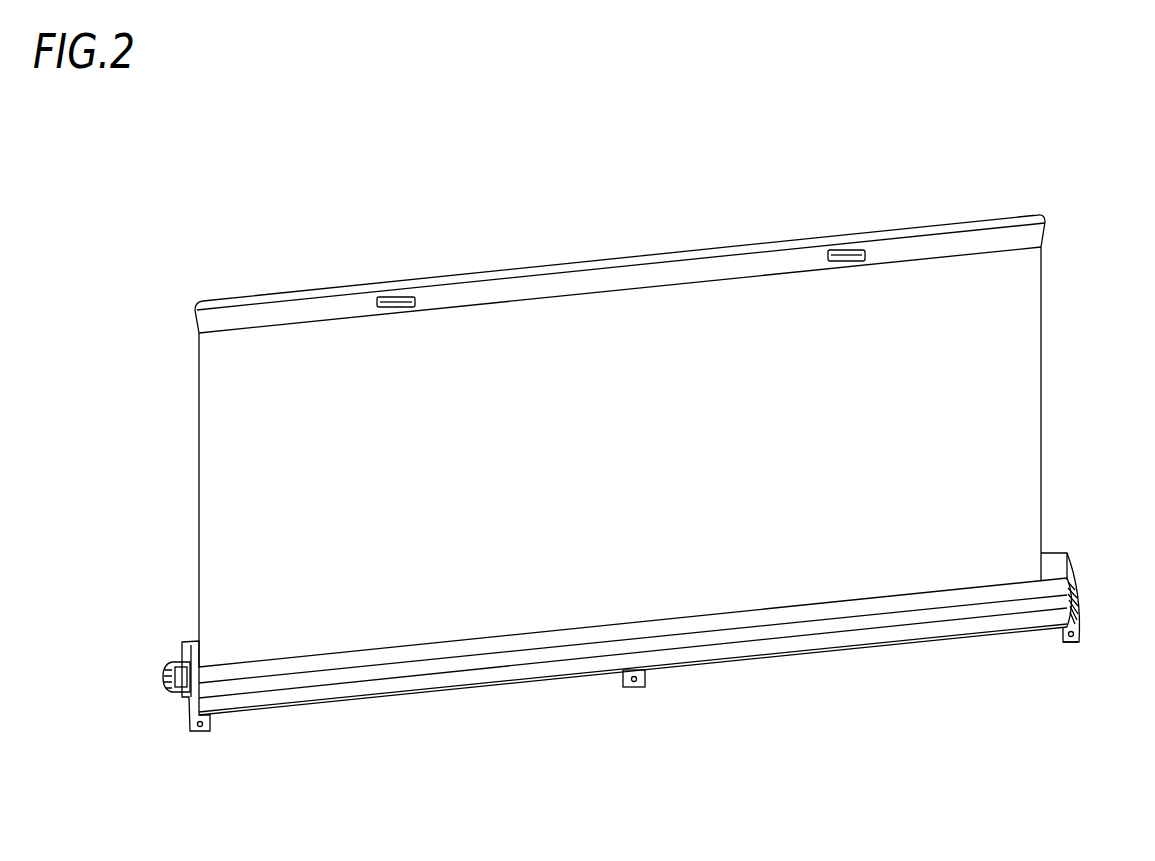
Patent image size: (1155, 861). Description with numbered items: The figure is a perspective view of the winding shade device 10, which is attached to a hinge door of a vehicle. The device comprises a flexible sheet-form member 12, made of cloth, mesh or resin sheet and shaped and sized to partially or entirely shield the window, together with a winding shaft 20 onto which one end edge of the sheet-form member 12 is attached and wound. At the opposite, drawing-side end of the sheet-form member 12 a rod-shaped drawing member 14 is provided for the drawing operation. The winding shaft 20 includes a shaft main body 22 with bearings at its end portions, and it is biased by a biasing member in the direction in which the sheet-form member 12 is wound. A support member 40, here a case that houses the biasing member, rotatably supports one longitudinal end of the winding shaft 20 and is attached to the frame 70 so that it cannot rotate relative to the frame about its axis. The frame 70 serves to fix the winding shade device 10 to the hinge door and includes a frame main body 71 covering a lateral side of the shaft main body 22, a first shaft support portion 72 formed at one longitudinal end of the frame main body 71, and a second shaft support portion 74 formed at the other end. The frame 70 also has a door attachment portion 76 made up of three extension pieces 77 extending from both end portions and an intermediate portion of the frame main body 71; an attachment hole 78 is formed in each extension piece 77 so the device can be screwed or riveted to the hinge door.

The winding shade device 10 is at (972, 138).
The sheet-form member 12 is at (1030, 301).
The drawing member 14 is at (992, 236).
The winding shaft 20 is at (756, 627).
The shaft main body 22 is at (793, 617).
The support member 40 is at (175, 700).
The frame 70 is at (280, 707).
The frame main body 71 is at (310, 708).
The first shaft support portion 72 is at (183, 660).
The second shaft support portion 74 is at (1080, 558).
The door attachment portion 76 is at (232, 776).
The extension piece 77 is at (205, 731).
The attachment hole 78 is at (199, 729).